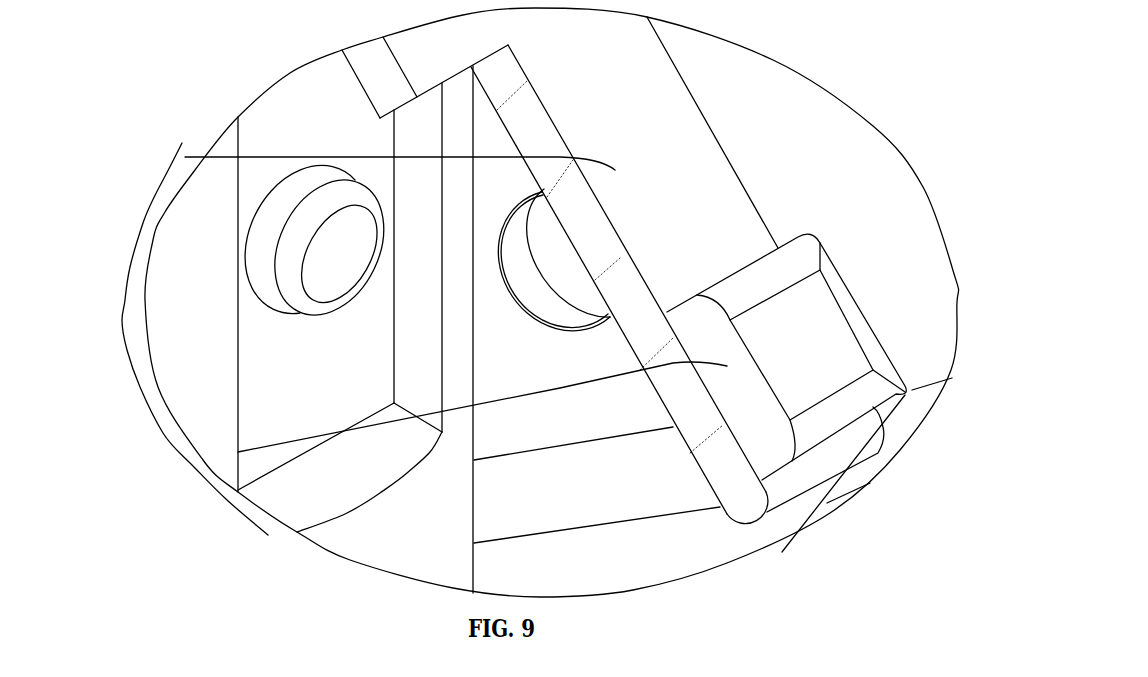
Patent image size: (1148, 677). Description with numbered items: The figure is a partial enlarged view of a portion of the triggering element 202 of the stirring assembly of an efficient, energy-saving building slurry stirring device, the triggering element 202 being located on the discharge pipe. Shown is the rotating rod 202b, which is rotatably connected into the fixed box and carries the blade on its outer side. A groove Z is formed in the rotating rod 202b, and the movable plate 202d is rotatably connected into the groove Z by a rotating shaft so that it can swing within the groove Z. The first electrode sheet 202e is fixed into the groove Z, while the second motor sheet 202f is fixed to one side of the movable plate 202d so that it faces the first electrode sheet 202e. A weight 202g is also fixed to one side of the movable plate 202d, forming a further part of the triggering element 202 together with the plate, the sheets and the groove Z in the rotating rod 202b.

The triggering element 202 is at (552, 302).
The rotating rod 202b is at (215, 377).
The movable plate 202d is at (185, 157).
The first electrode sheet 202e is at (300, 250).
The second motor sheet 202f is at (545, 298).
The weight 202g is at (238, 452).
The groove Z is at (343, 470).